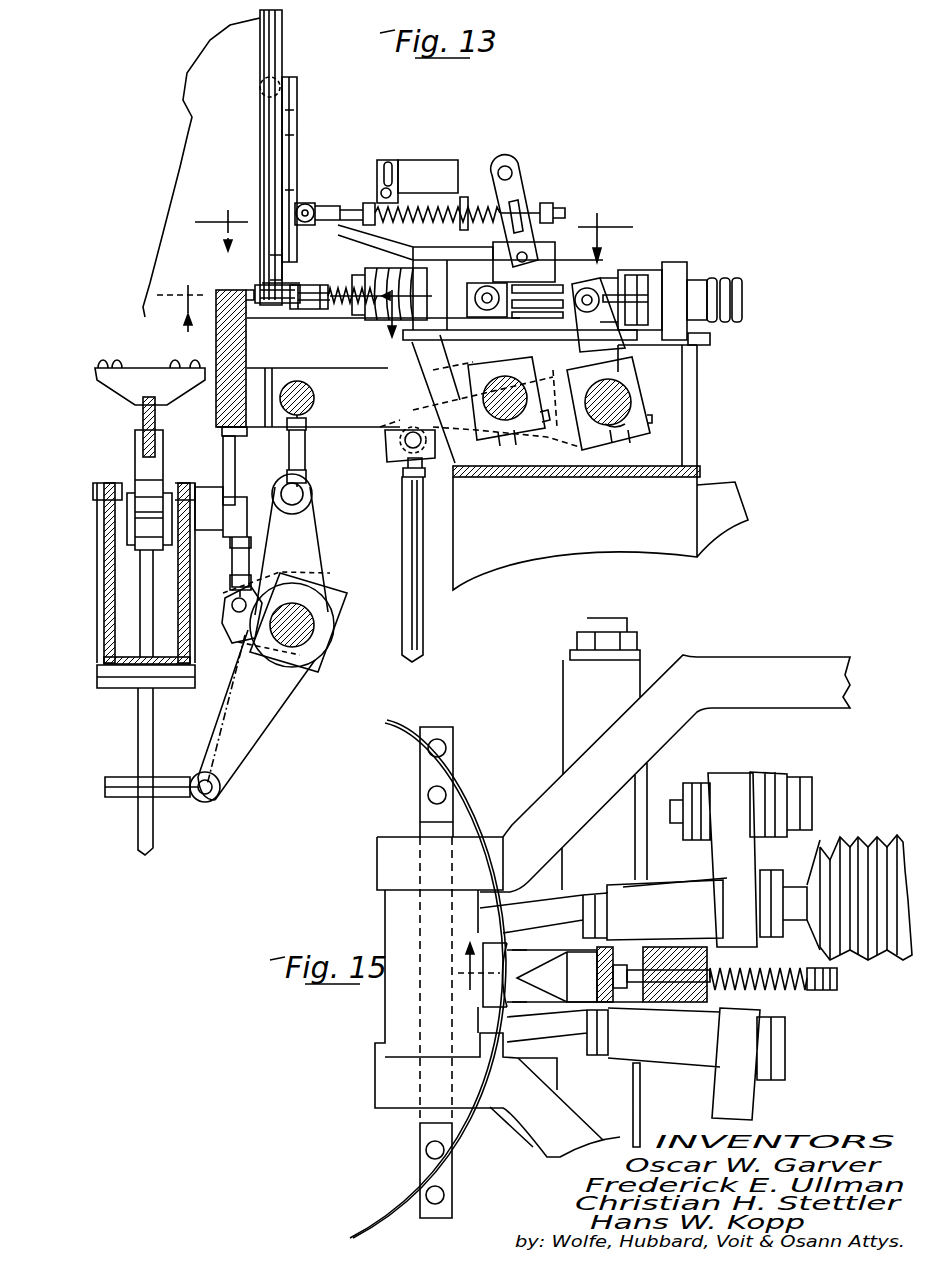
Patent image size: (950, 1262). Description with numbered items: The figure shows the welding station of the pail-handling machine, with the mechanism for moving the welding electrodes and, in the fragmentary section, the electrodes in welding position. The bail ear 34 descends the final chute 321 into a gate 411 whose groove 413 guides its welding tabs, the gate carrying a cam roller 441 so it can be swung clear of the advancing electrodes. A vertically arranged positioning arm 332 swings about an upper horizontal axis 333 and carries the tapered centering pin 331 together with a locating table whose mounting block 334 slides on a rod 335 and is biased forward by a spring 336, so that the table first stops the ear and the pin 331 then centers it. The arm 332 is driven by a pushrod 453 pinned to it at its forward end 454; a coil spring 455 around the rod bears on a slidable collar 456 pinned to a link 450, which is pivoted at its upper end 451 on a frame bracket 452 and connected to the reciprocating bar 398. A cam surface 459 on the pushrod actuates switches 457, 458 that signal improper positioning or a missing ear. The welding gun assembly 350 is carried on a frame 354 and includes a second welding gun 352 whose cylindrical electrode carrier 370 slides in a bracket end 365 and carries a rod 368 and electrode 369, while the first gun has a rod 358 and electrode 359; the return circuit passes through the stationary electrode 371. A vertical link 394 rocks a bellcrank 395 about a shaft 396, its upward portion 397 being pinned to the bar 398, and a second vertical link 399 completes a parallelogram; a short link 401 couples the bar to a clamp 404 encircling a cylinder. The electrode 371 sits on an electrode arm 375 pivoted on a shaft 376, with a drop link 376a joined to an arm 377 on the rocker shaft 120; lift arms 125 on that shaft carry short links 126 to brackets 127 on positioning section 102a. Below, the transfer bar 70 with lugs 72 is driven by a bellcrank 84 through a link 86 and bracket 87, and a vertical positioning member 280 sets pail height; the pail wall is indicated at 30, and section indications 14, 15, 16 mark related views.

In FIG. 13, the blade 30 is at (190, 124).
In FIG. 15, the blade 30 is at (468, 812).
In FIG. 13, the final chute 321 is at (283, 35).
In FIG. 13, the upper horizontal axis 333 is at (281, 74).
In FIG. 13, the positioning arm 332 is at (298, 106).
In FIG. 15, the positioning arm 332 is at (613, 1003).
In FIG. 13, the longitudinal groove 413 is at (262, 256).
In FIG. 13, the gate 411 is at (268, 272).
In FIG. 13, the forward end of pushrod 454 is at (309, 200).
In FIG. 13, the pushrod 453 is at (352, 206).
In FIG. 13, the cam surface 459 is at (366, 226).
In FIG. 13, the switch 457 is at (420, 160).
In FIG. 13, the switch 458 is at (430, 160).
In FIG. 13, the coil spring 455 is at (404, 222).
In FIG. 13, the frame bracket 452 is at (490, 185).
In FIG. 13, the upper end of link 451 is at (514, 172).
In FIG. 13, the link 450 is at (528, 185).
In FIG. 13, the slidable collar 456 is at (538, 205).
In FIG. 13, the cam roller 441 is at (289, 268).
In FIG. 13, the mounting block 334 is at (330, 304).
In FIG. 15, the mounting block 334 is at (670, 1003).
In FIG. 13, the tapered centering pin 331 is at (281, 299).
In FIG. 15, the tapered centering pin 331 is at (543, 973).
In FIG. 13, the bail ear 34 is at (284, 318).
In FIG. 15, the bail ear 34 is at (520, 989).
In FIG. 13, the electrode arm 375 is at (333, 372).
In FIG. 15, the electrode arm 375 is at (777, 668).
In FIG. 13, the stationary electrode 371 is at (226, 405).
In FIG. 13, the positioning member section 102a is at (247, 433).
In FIG. 13, the bracket 127 is at (233, 471).
In FIG. 13, the drop link 376a is at (303, 450).
In FIG. 13, the arm 377 is at (313, 528).
In FIG. 13, the short link 126 is at (250, 560).
In FIG. 13, the lift arm 125 is at (238, 630).
In FIG. 13, the rocker shaft 120 is at (328, 643).
In FIG. 13, the pail engaging lug 72 is at (142, 370).
In FIG. 13, the transfer member bar 70 is at (142, 428).
In FIG. 13, the bracket 87 is at (135, 470).
In FIG. 13, the bellcrank 84 is at (150, 580).
In FIG. 13, the link 86 is at (163, 548).
In FIG. 13, the section line 14 is at (414, 230).
In FIG. 13, the section line 15 is at (279, 326).
In FIG. 13, the short link 401 is at (500, 312).
In FIG. 13, the reciprocating bar 398 is at (602, 282).
In FIG. 13, the clamp 404 is at (645, 275).
In FIG. 13, the second welding gun 352 is at (696, 276).
In FIG. 13, the bracket end 365 is at (691, 336).
In FIG. 13, the welding gun assembly 350 is at (707, 385).
In FIG. 13, the frame 354 is at (690, 438).
In FIG. 13, the upwardly extending portion of bellcrank 397 is at (623, 348).
In FIG. 13, the shaft 396 is at (631, 444).
In FIG. 13, the second vertical link 399 is at (540, 346).
In FIG. 13, the shaft 376 is at (478, 383).
In FIG. 13, the bellcrank 395 is at (437, 462).
In FIG. 13, the vertical link 394 is at (425, 623).
In FIG. 15, the cylindrical electrode carrier 370 is at (763, 773).
In FIG. 15, the rod 368 is at (795, 887).
In FIG. 15, the electrode 369 is at (543, 918).
In FIG. 15, the vertical positioning member 280 is at (425, 830).
In FIG. 15, the spring 336 is at (797, 988).
In FIG. 15, the rod 335 is at (840, 980).
In FIG. 15, the rod 358 is at (792, 1047).
In FIG. 15, the electrode 359 is at (528, 1027).
In FIG. 15, the section line 16 is at (479, 979).